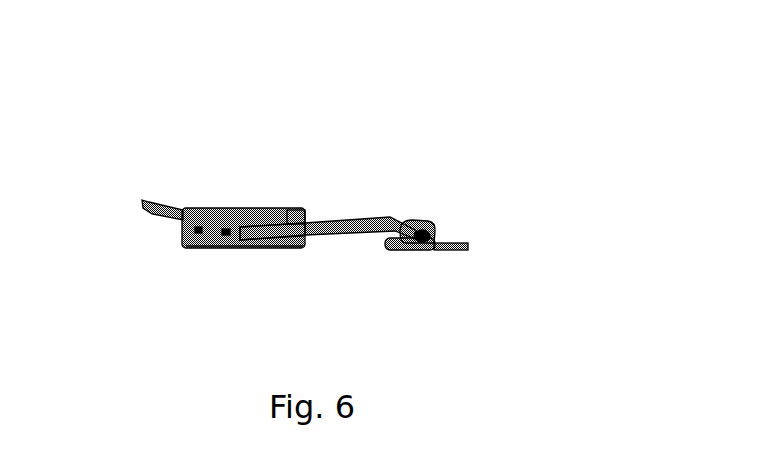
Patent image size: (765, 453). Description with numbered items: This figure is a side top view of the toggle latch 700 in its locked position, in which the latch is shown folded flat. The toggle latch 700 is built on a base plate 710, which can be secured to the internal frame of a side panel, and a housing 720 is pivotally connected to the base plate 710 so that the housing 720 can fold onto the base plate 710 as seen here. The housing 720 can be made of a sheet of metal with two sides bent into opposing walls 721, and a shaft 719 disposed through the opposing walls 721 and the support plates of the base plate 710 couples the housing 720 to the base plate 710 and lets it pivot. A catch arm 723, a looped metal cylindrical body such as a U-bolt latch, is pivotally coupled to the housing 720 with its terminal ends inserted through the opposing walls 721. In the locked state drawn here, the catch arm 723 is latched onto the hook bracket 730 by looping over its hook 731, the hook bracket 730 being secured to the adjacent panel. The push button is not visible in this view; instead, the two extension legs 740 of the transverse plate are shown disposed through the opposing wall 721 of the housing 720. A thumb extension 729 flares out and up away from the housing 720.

The toggle latch 700 is at (514, 164).
The base plate 710 is at (197, 250).
The shaft 719 is at (291, 222).
The housing 720 is at (208, 208).
The opposing walls 721 is at (283, 250).
The catch arm 723 is at (330, 222).
The thumb extension 729 is at (153, 201).
The hook bracket 730 is at (438, 250).
The hook 731 is at (418, 222).
The extension legs 740 is at (198, 208).